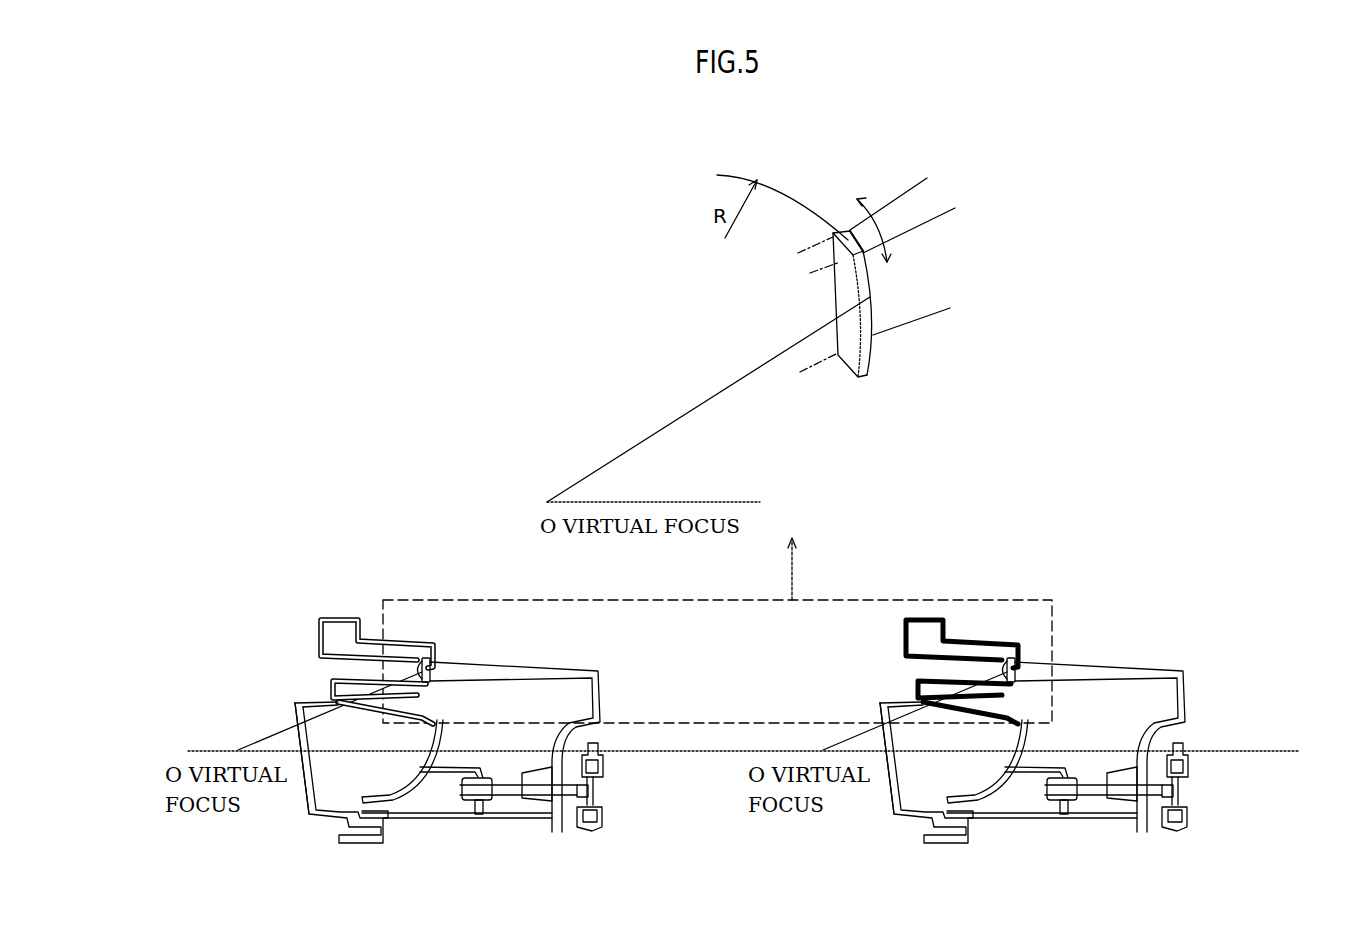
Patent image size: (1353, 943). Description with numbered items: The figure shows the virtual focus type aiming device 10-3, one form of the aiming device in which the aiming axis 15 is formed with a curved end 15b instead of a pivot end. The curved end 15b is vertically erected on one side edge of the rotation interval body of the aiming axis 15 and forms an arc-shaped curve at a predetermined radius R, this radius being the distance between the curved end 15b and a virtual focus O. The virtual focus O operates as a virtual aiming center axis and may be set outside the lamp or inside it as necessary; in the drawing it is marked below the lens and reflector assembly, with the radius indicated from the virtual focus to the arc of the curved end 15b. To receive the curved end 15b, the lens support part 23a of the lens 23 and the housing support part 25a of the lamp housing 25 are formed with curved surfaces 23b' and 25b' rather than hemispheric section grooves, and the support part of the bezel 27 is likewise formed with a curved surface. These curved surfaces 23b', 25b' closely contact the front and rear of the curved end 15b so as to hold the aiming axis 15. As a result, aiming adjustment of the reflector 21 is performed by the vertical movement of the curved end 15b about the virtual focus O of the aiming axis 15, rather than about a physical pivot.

The virtual focus type aiming device 10-3 is at (268, 627).
The aiming axis 15 is at (438, 705).
The curved end 15b is at (866, 361).
The reflector 21 is at (413, 783).
The lens 23 is at (295, 703).
The lens support part 23a is at (793, 373).
The curved surface 23b' is at (792, 279).
The lamp housing 25 is at (598, 690).
The housing support part 25a is at (903, 200).
The curved surface 25b' is at (936, 246).
The bezel 27 is at (905, 690).